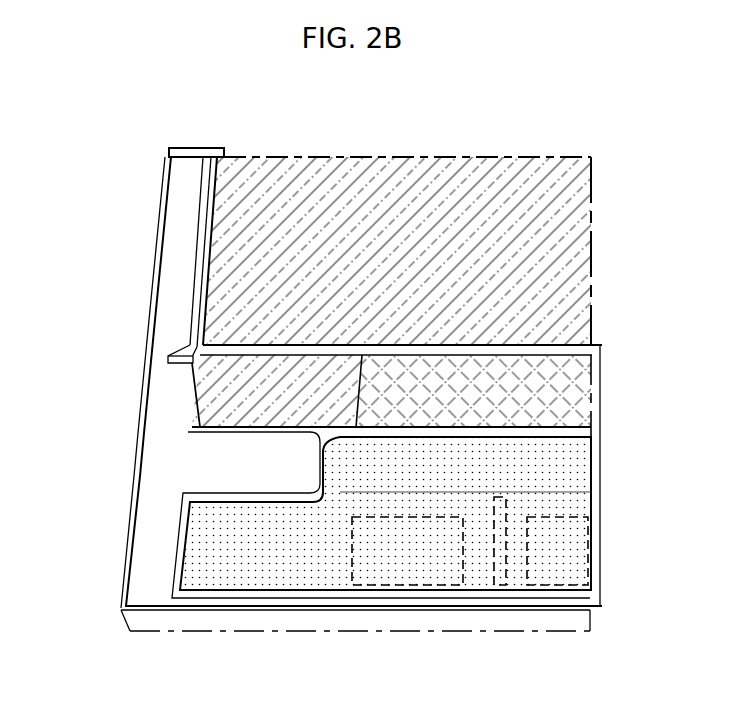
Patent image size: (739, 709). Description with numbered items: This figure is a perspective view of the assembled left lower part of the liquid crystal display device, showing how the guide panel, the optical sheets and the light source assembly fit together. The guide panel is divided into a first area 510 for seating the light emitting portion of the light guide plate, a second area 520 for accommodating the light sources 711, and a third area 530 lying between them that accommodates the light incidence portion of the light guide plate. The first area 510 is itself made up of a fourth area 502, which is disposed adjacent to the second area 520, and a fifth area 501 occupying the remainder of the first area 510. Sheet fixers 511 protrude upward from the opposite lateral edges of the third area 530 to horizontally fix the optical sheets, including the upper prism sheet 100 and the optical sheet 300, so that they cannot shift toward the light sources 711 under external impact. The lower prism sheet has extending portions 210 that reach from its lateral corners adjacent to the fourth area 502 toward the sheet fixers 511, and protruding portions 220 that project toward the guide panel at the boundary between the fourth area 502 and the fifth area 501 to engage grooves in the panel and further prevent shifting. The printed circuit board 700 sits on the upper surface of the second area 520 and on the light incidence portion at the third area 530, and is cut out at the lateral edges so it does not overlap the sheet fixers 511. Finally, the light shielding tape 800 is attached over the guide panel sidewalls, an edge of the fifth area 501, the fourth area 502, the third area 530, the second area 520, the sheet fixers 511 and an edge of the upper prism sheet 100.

The upper prism sheet 100 is at (565, 258).
The extending portions 210 is at (267, 372).
The protruding portions 220 is at (186, 332).
The optical sheet 300 is at (563, 386).
The light shielding tape 800 is at (601, 345).
The printed circuit board 700 is at (565, 473).
The light sources 711 is at (410, 586).
The first area 510 is at (105, 295).
The fifth area 501 is at (176, 158).
The fourth area 502 is at (122, 376).
The third area 530 is at (117, 454).
The second area 520 is at (179, 476).
The sheet fixers 511 is at (240, 460).